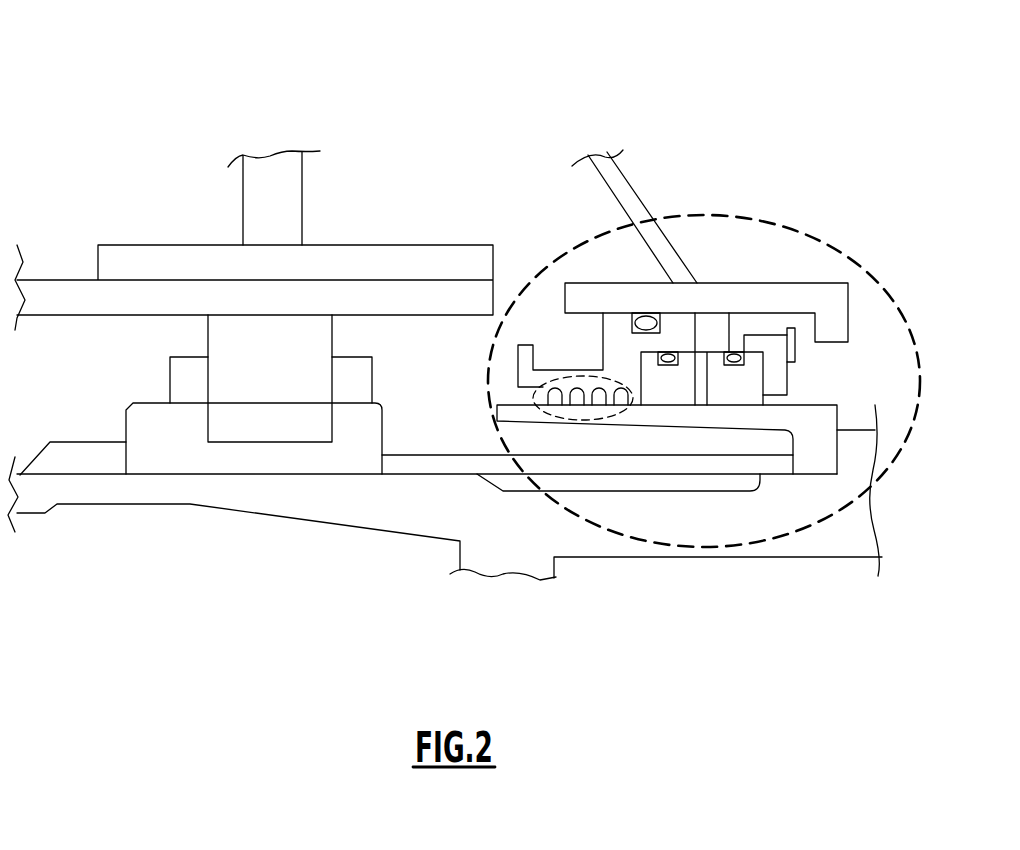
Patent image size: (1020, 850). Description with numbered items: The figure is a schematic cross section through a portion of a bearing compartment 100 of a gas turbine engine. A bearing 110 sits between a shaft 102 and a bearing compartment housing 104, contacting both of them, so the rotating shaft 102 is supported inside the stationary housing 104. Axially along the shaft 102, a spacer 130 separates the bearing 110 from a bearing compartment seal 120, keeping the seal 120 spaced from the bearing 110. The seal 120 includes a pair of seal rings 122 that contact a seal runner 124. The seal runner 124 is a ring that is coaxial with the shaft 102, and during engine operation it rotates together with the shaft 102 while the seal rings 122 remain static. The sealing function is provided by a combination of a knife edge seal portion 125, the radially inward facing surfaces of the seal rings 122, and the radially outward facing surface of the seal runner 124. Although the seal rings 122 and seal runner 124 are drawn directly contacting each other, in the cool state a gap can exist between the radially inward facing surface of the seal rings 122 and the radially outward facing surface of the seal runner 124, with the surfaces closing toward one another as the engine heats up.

The bearing compartment 100 is at (176, 80).
The shaft 102 is at (293, 503).
The bearing compartment housing 104 is at (388, 297).
The bearing 110 is at (238, 353).
The bearing compartment seal 120 is at (783, 223).
The seal rings 122 is at (650, 378).
The seal runner 124 is at (813, 452).
The knife edge seal portion 125 is at (587, 343).
The spacer 130 is at (450, 462).